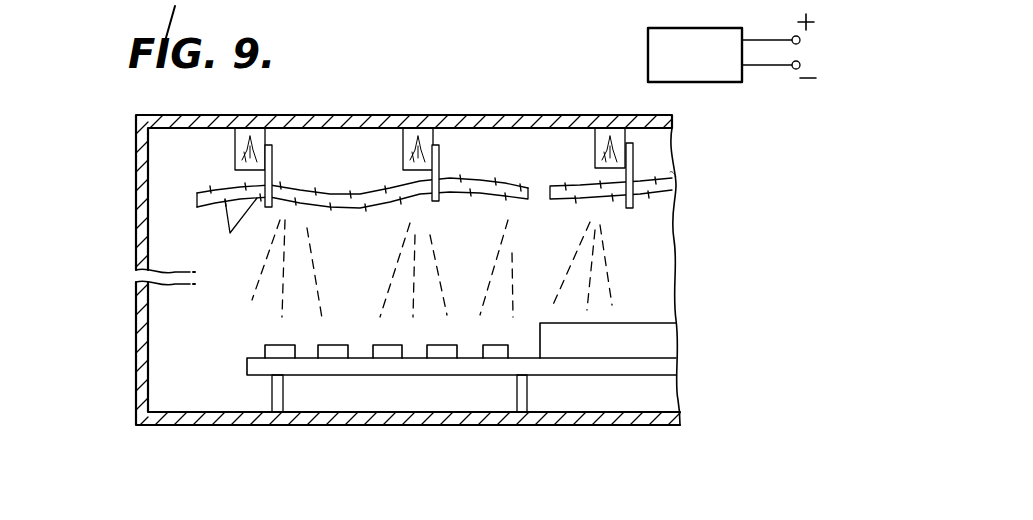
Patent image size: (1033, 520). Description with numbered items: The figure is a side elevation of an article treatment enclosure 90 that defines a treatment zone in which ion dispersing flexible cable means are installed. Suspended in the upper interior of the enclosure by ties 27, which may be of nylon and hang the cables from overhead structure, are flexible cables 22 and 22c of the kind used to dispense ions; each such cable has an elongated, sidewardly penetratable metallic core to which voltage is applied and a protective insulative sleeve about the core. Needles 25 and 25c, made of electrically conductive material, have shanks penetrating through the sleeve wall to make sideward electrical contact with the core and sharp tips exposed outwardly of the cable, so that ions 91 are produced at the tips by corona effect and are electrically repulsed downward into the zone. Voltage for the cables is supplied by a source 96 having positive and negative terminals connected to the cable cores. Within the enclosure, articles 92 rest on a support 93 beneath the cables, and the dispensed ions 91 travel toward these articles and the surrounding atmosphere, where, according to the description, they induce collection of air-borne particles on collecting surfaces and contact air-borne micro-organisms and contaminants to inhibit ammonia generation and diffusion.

The article treatment enclosure 90 is at (128, 320).
The cable 22 is at (334, 184).
The cable 22c is at (650, 208).
The tie 27 is at (439, 157).
The needle 25 is at (236, 229).
The needle 25c is at (670, 172).
The ions 91 is at (432, 269).
The articles 92 is at (385, 353).
The article support 93 is at (657, 343).
The voltage source 96 is at (732, 48).